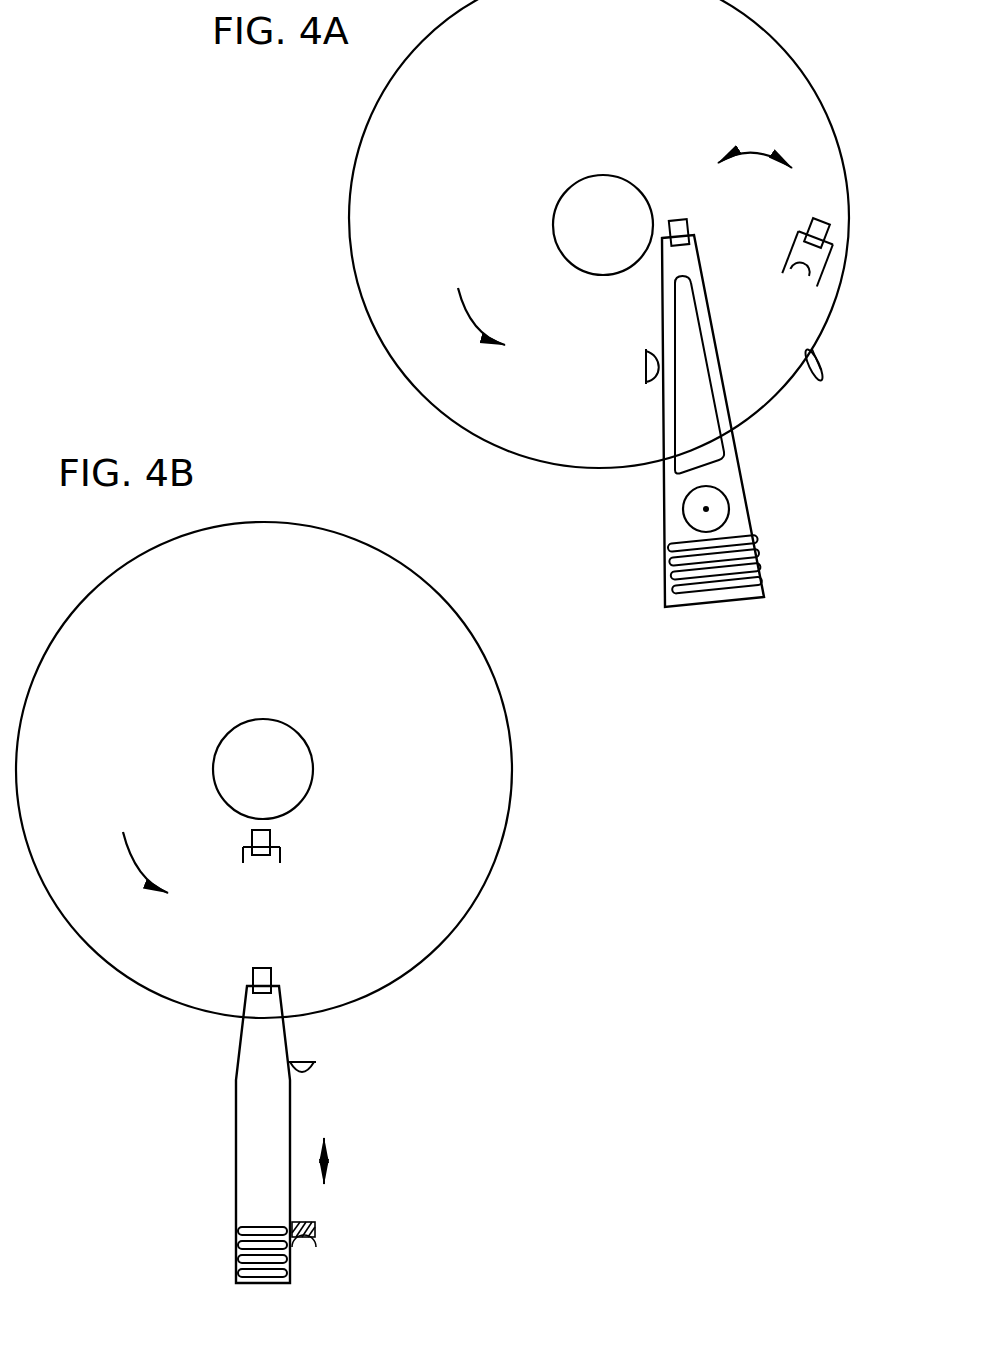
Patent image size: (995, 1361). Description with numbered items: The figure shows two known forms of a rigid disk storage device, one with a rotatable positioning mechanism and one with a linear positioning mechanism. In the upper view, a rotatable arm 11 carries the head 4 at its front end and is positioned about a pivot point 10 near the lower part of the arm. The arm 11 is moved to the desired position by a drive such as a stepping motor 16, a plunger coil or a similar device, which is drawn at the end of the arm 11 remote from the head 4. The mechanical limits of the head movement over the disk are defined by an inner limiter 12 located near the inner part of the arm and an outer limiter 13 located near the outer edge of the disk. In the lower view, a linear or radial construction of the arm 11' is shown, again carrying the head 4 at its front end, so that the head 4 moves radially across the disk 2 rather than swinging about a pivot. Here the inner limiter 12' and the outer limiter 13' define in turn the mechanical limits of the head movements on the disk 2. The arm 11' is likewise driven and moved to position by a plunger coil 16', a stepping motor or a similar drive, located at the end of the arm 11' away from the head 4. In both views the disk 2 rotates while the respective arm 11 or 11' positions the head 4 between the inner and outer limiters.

In FIG. 4A, the disk 2 is at (366, 184).
In FIG. 4B, the disk 2 is at (485, 681).
In FIG. 4A, the head 4 is at (679, 226).
In FIG. 4B, the head 4 is at (267, 974).
In FIG. 4A, the pivot point 10 is at (694, 515).
In FIG. 4A, the arm 11 is at (742, 421).
In FIG. 4B, the arm 11' is at (237, 1134).
In FIG. 4A, the inner limiter 12 is at (619, 359).
In FIG. 4B, the inner limiter 12' is at (337, 1080).
In FIG. 4A, the outer limiter 13 is at (831, 394).
In FIG. 4B, the outer limiter 13' is at (348, 1247).
In FIG. 4A, the stepping motor 16 is at (748, 564).
In FIG. 4B, the plunger coil 16' is at (230, 1245).